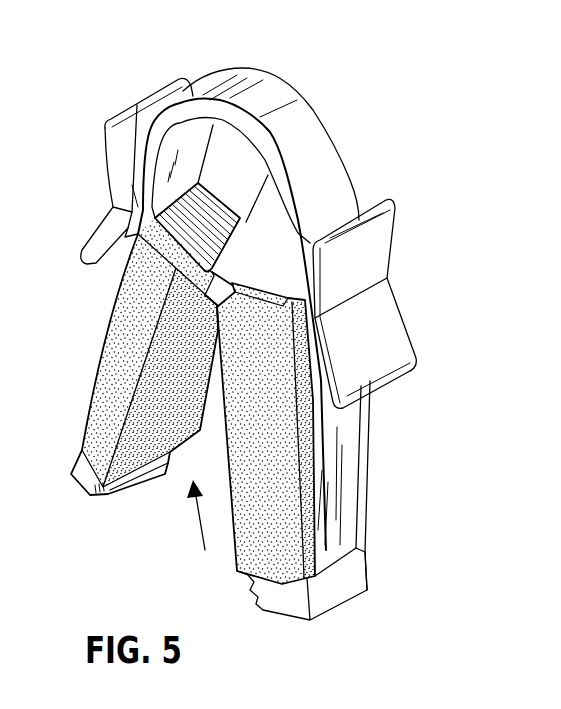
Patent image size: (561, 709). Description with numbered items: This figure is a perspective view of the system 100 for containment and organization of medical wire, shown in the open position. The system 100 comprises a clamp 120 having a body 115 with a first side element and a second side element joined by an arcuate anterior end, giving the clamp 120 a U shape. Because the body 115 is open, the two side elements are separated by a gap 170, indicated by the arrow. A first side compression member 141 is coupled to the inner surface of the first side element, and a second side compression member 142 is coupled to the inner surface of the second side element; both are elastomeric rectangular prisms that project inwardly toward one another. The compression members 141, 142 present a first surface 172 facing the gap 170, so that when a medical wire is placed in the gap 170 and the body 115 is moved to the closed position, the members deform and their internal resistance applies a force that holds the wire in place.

The system for containment and organization of medical wire 100 is at (410, 138).
The clamp 120 is at (314, 90).
The body 115 is at (349, 168).
The first surface 172 is at (167, 363).
The first side compression member 141 is at (122, 388).
The second side compression member 142 is at (262, 427).
The gap 170 is at (205, 529).